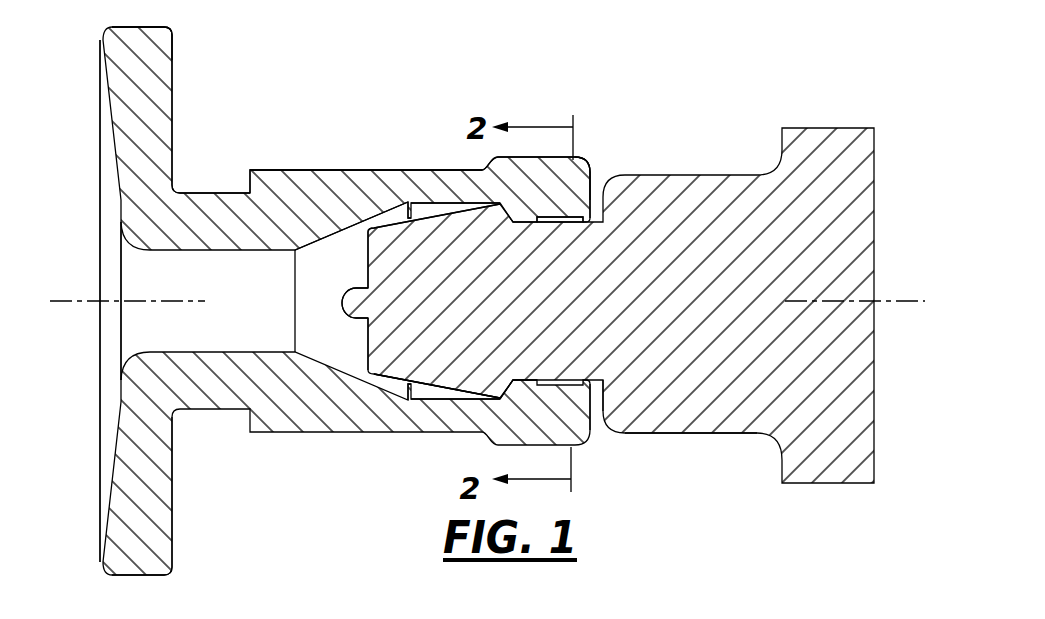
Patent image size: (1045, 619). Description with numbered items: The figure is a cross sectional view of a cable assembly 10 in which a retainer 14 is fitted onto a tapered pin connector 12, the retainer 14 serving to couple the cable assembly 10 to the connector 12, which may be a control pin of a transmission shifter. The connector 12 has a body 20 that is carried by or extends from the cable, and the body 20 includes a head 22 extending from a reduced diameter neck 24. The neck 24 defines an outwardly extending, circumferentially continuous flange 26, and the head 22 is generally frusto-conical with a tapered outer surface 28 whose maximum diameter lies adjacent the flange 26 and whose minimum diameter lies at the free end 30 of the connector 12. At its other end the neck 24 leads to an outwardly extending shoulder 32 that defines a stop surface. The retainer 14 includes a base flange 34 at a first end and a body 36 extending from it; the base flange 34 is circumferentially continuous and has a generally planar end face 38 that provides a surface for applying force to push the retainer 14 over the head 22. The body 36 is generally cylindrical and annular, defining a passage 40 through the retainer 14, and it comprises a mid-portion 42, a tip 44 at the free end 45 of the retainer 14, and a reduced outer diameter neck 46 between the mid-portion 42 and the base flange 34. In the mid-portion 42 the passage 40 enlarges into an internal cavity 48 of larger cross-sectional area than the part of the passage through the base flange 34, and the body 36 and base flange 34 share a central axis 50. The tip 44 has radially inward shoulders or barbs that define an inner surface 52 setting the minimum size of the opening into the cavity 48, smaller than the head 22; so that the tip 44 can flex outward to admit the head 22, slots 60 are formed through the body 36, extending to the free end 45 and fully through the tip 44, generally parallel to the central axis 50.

The cable assembly 10 is at (652, 27).
The connector 12 is at (727, 160).
The retainer 14 is at (286, 138).
The body 20 is at (696, 425).
The head 22 is at (397, 370).
The neck 24 is at (593, 385).
The flange 26 is at (513, 400).
The tapered outer surface 28 is at (436, 388).
The free end 30 is at (368, 260).
The shoulder 32 is at (597, 385).
The base flange 34 is at (158, 43).
The body 36 is at (390, 165).
The end face 38 is at (103, 124).
The passage 40 is at (133, 332).
The mid-portion 42 is at (337, 184).
The tip 44 is at (560, 176).
The free end 45 is at (575, 186).
The neck 46 is at (202, 193).
The internal cavity 48 is at (420, 208).
The central axis 50 is at (72, 297).
The inner surface 52 is at (566, 226).
The slots 60 is at (354, 304).